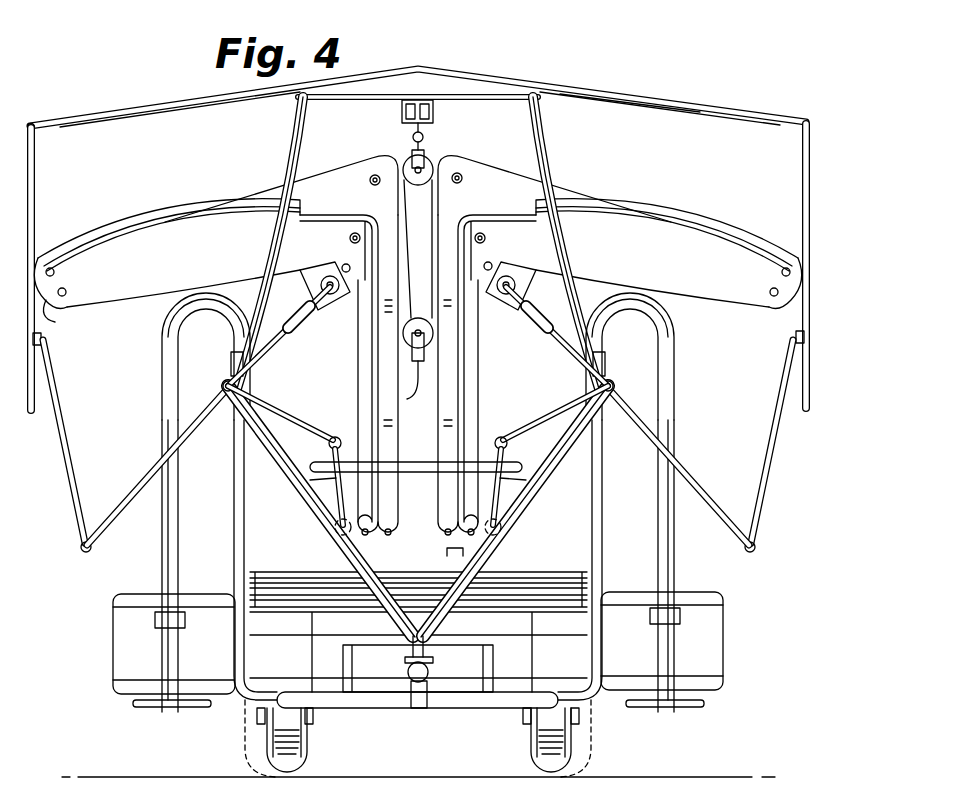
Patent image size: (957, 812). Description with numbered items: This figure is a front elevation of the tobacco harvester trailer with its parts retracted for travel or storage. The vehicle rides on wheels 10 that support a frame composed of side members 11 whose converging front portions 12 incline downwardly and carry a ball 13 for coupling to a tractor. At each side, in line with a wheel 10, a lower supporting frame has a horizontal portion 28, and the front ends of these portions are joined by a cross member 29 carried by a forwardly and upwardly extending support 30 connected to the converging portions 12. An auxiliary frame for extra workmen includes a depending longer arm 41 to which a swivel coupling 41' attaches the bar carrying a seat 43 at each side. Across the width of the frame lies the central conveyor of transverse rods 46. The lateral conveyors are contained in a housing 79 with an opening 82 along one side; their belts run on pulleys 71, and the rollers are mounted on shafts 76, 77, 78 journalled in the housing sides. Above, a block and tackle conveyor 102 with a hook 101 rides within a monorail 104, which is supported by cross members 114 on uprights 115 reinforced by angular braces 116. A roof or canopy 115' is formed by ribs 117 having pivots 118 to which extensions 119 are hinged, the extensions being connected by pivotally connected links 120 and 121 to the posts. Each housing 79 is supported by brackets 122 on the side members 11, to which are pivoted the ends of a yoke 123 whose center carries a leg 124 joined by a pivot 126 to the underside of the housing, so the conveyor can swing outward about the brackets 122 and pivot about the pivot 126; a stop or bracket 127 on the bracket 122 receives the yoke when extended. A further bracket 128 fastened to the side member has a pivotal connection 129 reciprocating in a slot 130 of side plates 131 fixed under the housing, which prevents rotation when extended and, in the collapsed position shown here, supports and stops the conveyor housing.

The wheels 10 is at (307, 750).
The side members 11 is at (222, 386).
The converging front portions 12 is at (305, 500).
The ball 13 is at (429, 672).
The horizontal portion 28 is at (170, 710).
The cross member 29 is at (475, 712).
The support 30 is at (421, 712).
The depending longer arm 41 is at (434, 566).
The swivel coupling 41' is at (417, 626).
The seat 43 is at (115, 667).
The transverse rods 46 is at (310, 578).
The pulleys 71 is at (50, 309).
The shaft 76 is at (343, 267).
The shaft 77 is at (350, 238).
The shaft 78 is at (370, 183).
The housing 79 is at (330, 180).
The opening 82 is at (145, 245).
The hook 101 is at (413, 392).
The block and tackle conveyor 102 is at (435, 336).
The monorail 104 is at (437, 114).
The cross members 114 is at (326, 99).
The uprights 115 is at (418, 244).
The roof or canopy 115' is at (630, 87).
The angular braces 116 is at (484, 91).
The ribs 117 is at (142, 117).
The pivots 118 is at (40, 133).
The extensions 119 is at (37, 202).
The link 120 is at (60, 400).
The link 121 is at (138, 485).
The brackets 122 is at (258, 377).
The yoke 123 is at (280, 347).
The stanchion or leg 124 is at (302, 312).
The pivot 126 is at (322, 285).
The stop or bracket 127 is at (225, 362).
The bracket 128 is at (304, 408).
The pivotal connection 129 is at (335, 436).
The slot 130 is at (305, 497).
The side plates 131 is at (312, 481).